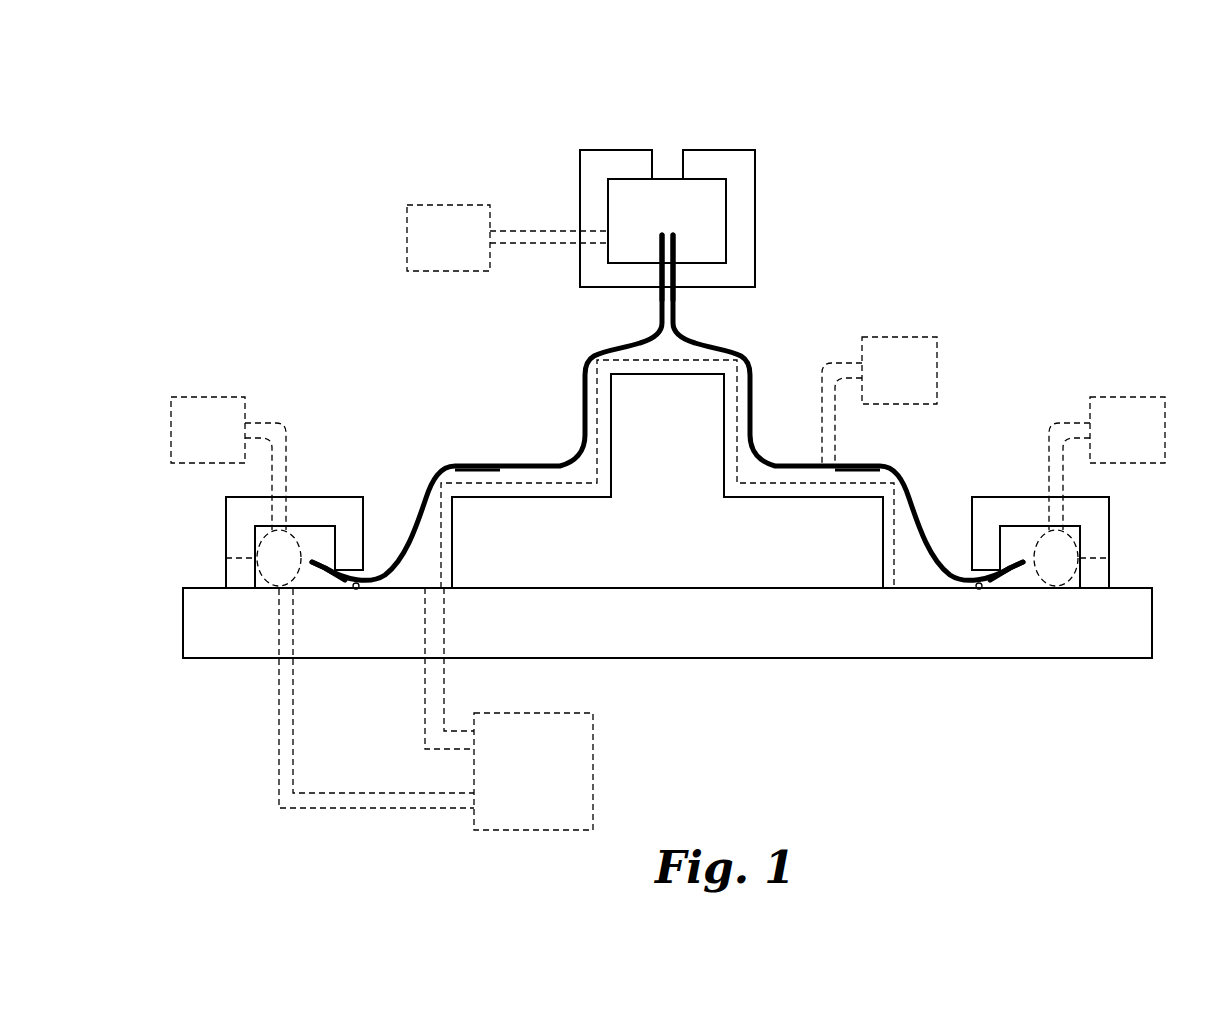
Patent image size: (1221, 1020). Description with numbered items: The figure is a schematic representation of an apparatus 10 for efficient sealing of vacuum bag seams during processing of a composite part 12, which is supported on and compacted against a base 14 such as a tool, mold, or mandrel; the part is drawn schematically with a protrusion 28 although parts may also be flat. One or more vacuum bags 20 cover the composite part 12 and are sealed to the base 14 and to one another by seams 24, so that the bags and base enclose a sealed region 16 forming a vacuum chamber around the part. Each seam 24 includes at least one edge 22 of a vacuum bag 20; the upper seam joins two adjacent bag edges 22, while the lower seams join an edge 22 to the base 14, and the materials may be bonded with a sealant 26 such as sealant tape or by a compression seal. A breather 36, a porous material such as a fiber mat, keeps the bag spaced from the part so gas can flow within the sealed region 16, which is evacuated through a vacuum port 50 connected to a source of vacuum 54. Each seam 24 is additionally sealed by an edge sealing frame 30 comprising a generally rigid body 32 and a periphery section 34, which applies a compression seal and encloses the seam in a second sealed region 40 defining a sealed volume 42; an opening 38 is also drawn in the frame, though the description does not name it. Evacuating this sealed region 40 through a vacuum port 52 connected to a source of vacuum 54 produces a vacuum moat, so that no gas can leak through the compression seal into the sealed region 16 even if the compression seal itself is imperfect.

The apparatus 10 is at (204, 133).
The composite part 12 is at (890, 545).
The base 14 is at (645, 658).
The sealed region 16 is at (922, 575).
The vacuum bag 20 is at (500, 466).
The edge 22 is at (660, 250).
The seam 24 is at (668, 273).
The sealant 26 is at (354, 590).
The protrusion 28 is at (727, 430).
The edge sealing frame 30 is at (577, 158).
The body 32 is at (578, 193).
The periphery section 34 is at (632, 150).
The breather 36 is at (270, 589).
The slot opening 38 is at (663, 148).
The sealed region 40 is at (718, 222).
The sealed volume 42 is at (718, 245).
The vacuum port 50 is at (822, 460).
The vacuum port 52 is at (585, 232).
The source of vacuum 54 is at (430, 205).